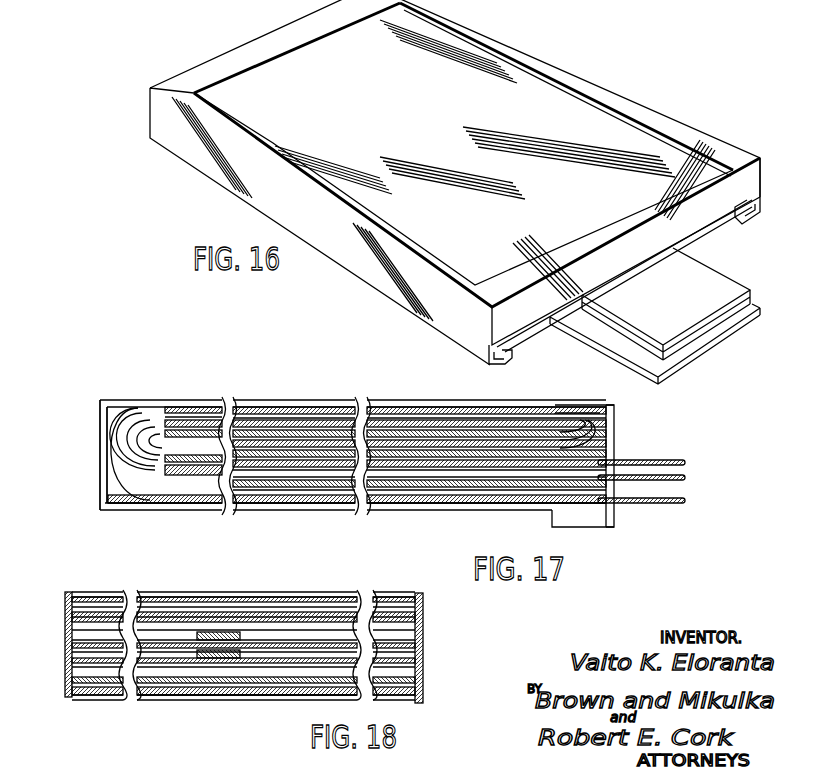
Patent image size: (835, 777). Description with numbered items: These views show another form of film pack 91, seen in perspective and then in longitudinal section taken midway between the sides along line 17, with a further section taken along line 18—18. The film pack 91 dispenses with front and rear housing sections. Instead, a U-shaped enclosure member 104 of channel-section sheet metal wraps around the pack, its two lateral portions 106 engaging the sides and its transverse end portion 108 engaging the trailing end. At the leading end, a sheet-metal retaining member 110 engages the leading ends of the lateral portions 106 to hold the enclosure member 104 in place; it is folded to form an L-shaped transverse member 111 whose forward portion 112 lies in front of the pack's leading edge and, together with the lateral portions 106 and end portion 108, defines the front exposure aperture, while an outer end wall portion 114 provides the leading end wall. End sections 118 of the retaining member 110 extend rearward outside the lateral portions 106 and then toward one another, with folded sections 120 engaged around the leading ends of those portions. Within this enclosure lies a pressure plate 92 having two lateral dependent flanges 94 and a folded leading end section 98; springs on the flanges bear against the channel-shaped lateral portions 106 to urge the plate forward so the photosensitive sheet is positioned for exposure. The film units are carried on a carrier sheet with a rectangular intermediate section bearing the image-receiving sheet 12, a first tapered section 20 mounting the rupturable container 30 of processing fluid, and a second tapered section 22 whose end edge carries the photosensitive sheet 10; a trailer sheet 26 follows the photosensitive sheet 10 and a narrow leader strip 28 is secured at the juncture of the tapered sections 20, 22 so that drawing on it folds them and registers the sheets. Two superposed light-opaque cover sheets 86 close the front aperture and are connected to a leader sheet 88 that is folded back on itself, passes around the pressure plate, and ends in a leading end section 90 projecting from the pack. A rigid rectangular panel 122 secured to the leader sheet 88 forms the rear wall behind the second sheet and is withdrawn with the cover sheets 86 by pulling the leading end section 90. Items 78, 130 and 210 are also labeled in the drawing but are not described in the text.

In FIG. 17, the photosensitive sheet 10 is at (400, 412).
In FIG. 18, the photosensitive sheet 10 is at (348, 620).
In FIG. 17, the image-receiving sheet 12 is at (388, 457).
In FIG. 18, the image-receiving sheet 12 is at (122, 645).
In FIG. 16, the section line 17- 17 is at (287, 5).
In FIG. 17, the line 18— 18 is at (273, 380).
In FIG. 17, the first tapered section 20 is at (410, 455).
In FIG. 17, the second tapered section 22 is at (227, 482).
In FIG. 17, the trailer sheet 26 is at (613, 424).
In FIG. 17, the leader strip 28 is at (325, 467).
In FIG. 18, the leader strip 28 is at (263, 637).
In FIG. 17, the rupturable container 30 is at (492, 462).
In FIG. 16, the terminal leads 78 is at (700, 337).
In FIG. 17, the terminal leads 78 is at (692, 477).
In FIG. 16, the cover sheets 86 is at (437, 137).
In FIG. 17, the cover sheets 86 is at (452, 407).
In FIG. 18, the cover sheets 86 is at (243, 603).
In FIG. 17, the leader sheet 88 is at (112, 482).
In FIG. 18, the leader sheet 88 is at (142, 697).
In FIG. 16, the leading end section 90 is at (703, 357).
In FIG. 17, the leading end section 90 is at (688, 500).
In FIG. 16, the film pack 91 is at (553, 45).
In FIG. 17, the film pack 91 is at (193, 395).
In FIG. 17, the pressure plate 92 is at (250, 427).
In FIG. 18, the pressure plate 92 is at (172, 618).
In FIG. 18, the lateral dependent flanges 94 is at (70, 657).
In FIG. 17, the folded leading end section 98 is at (150, 455).
In FIG. 16, the U-shaped enclosure member 104 is at (183, 70).
In FIG. 17, the U-shaped enclosure member 104 is at (170, 397).
In FIG. 18, the U-shaped enclosure member 104 is at (72, 583).
In FIG. 16, the lateral portions 106 is at (580, 77).
In FIG. 17, the lateral portions 106 is at (207, 402).
In FIG. 18, the lateral portions 106 is at (65, 632).
In FIG. 16, the transverse end portion 108 is at (262, 61).
In FIG. 17, the transverse end portion 108 is at (102, 453).
In FIG. 18, the transverse end portion 108 is at (268, 593).
In FIG. 16, the retaining member 110 is at (737, 135).
In FIG. 16, the L-shaped transverse member 111 is at (667, 233).
In FIG. 17, the L-shaped transverse member 111 is at (625, 433).
In FIG. 16, the forward portion 112 is at (610, 232).
In FIG. 17, the forward portion 112 is at (560, 407).
In FIG. 16, the outer end wall portion 114 is at (587, 290).
In FIG. 17, the outer end wall portion 114 is at (618, 452).
In FIG. 16, the end sections 118 is at (760, 213).
In FIG. 17, the end sections 118 is at (597, 527).
In FIG. 16, the folded sections 120 is at (503, 360).
In FIG. 16, the rectangular panel 122 is at (525, 333).
In FIG. 17, the rectangular panel 122 is at (280, 507).
In FIG. 18, the rectangular panel 122 is at (167, 693).
In FIG. 16, the panel assembly 130 is at (189, 4).
In FIG. 17, the connector 210 is at (625, 408).